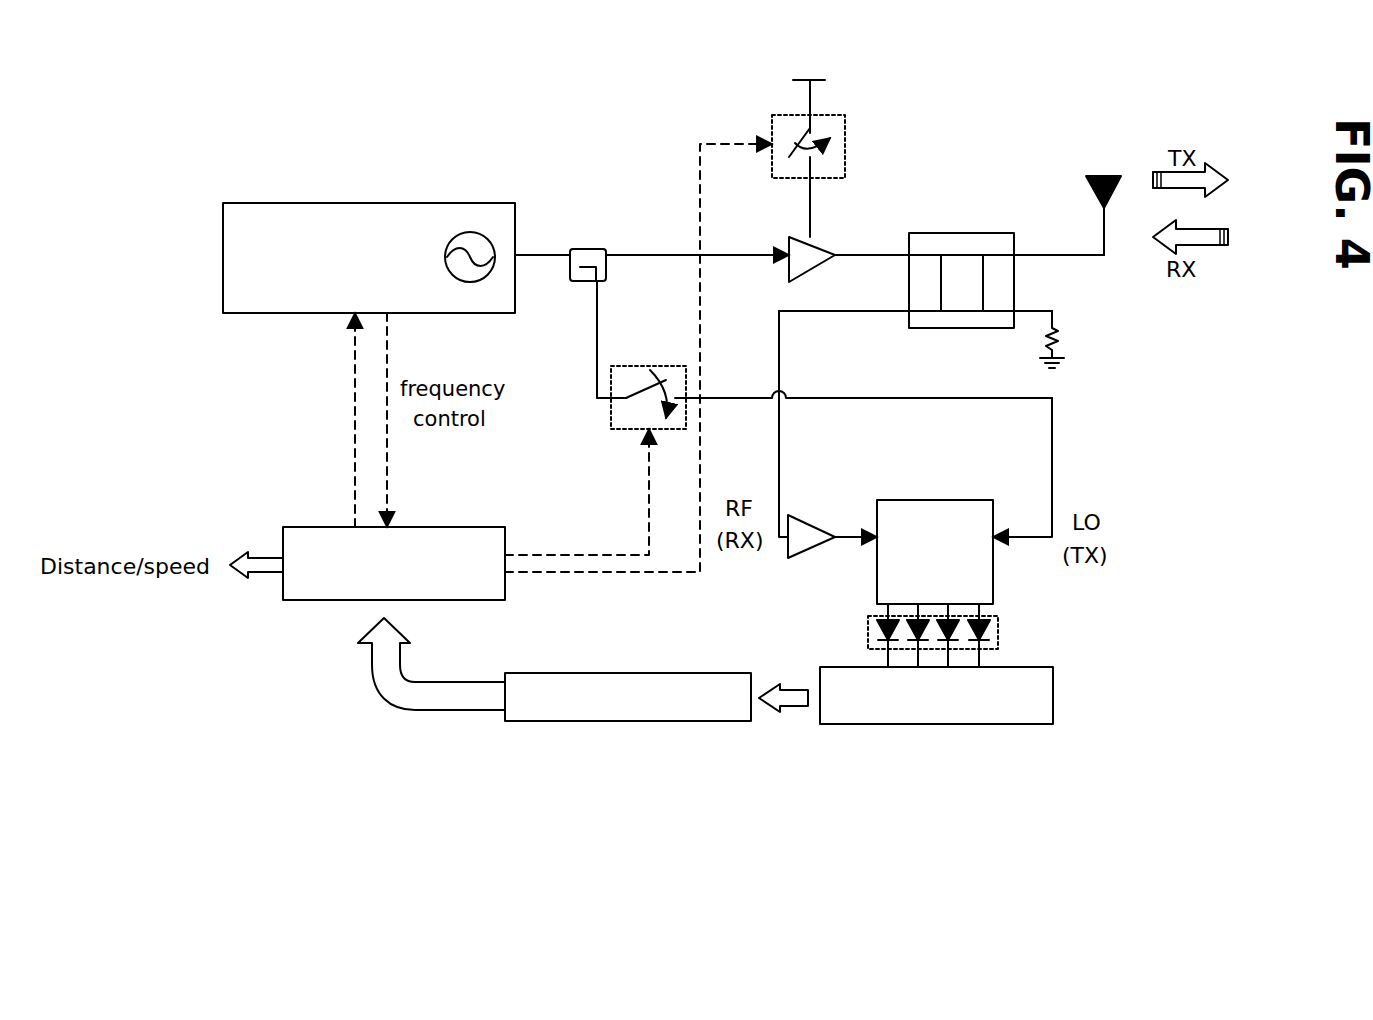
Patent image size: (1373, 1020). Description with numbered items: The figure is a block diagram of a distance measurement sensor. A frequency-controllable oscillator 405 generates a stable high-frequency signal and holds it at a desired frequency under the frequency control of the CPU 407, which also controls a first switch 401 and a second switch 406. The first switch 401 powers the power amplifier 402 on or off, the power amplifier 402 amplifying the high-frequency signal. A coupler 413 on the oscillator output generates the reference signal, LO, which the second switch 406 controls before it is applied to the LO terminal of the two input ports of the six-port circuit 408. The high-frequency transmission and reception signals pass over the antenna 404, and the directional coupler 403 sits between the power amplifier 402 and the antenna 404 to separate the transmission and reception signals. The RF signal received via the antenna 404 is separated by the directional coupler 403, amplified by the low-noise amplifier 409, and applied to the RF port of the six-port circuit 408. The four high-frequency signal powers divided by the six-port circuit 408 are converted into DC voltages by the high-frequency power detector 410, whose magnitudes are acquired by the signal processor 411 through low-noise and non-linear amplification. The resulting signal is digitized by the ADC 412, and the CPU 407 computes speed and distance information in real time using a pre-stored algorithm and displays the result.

The first switch 401 is at (845, 140).
The power amplifier 402 is at (818, 246).
The directional coupler 403 is at (972, 233).
The antenna 404 is at (1098, 176).
The frequency-controllable oscillator 405 is at (278, 203).
The second switch 406 is at (662, 366).
The CPU 407 is at (472, 527).
The 6-port circuit 408 is at (950, 500).
The low-noise amplifier 409 is at (810, 557).
The high-frequency power detector 410 is at (998, 632).
The signal processor 411 is at (1014, 724).
The ADC 412 is at (693, 721).
The coupler 413 is at (586, 249).